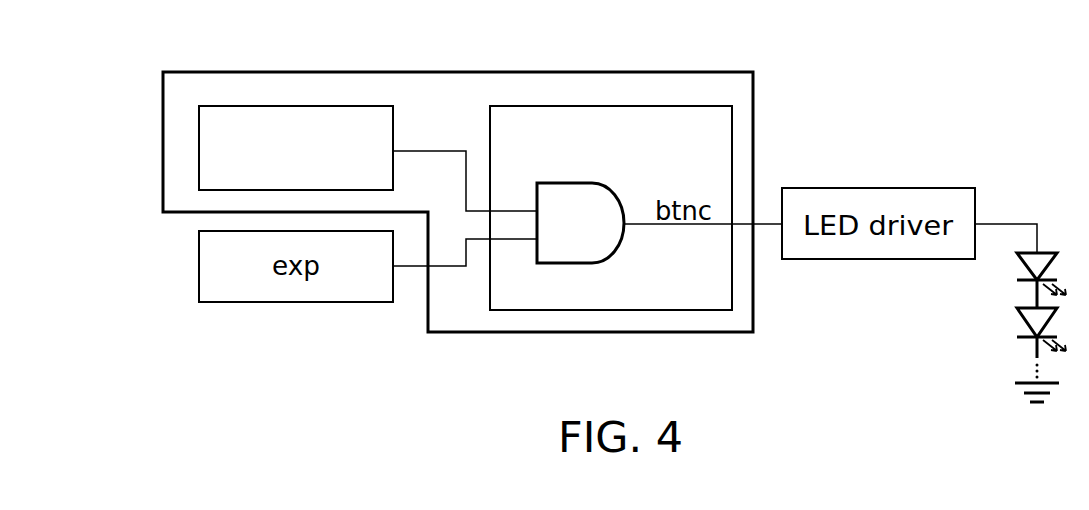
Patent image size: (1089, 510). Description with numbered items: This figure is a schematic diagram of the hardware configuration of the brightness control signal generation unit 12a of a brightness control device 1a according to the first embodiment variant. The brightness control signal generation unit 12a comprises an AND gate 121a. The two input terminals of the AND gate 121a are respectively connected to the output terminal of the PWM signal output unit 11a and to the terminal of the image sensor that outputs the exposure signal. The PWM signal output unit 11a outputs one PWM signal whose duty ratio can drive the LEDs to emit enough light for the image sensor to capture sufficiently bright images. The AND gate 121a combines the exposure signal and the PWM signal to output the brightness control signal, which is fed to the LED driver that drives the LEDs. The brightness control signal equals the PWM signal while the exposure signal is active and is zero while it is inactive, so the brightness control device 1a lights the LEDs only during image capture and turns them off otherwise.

The brightness control device 1a is at (163, 72).
The PWM signal output unit 11a is at (199, 106).
The brightness control signal generation unit 12a is at (611, 189).
The AND gate 121a is at (536, 183).